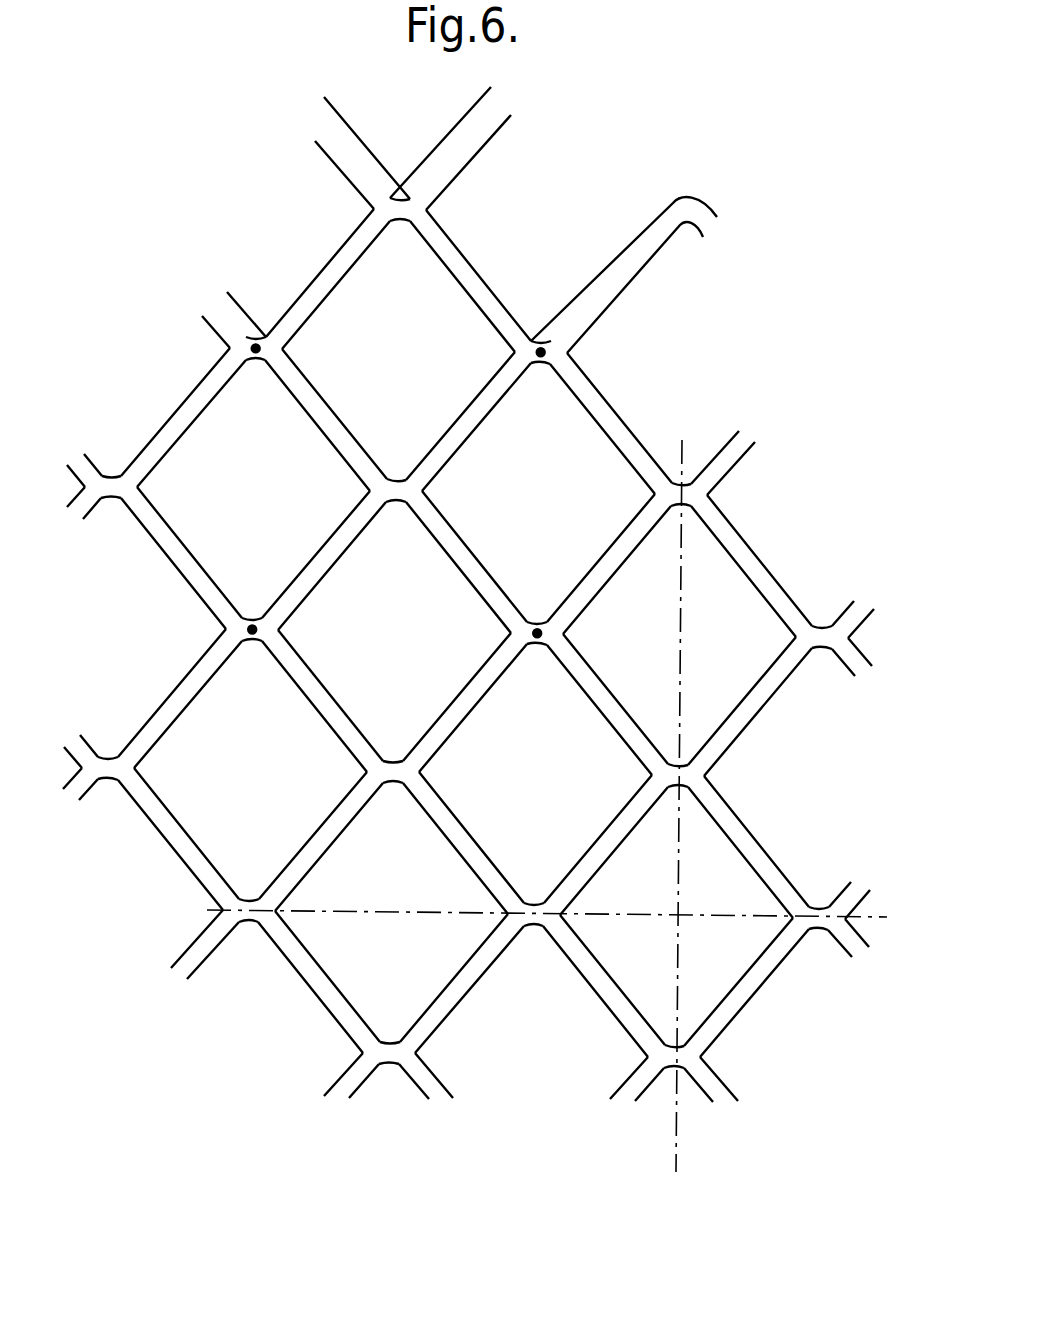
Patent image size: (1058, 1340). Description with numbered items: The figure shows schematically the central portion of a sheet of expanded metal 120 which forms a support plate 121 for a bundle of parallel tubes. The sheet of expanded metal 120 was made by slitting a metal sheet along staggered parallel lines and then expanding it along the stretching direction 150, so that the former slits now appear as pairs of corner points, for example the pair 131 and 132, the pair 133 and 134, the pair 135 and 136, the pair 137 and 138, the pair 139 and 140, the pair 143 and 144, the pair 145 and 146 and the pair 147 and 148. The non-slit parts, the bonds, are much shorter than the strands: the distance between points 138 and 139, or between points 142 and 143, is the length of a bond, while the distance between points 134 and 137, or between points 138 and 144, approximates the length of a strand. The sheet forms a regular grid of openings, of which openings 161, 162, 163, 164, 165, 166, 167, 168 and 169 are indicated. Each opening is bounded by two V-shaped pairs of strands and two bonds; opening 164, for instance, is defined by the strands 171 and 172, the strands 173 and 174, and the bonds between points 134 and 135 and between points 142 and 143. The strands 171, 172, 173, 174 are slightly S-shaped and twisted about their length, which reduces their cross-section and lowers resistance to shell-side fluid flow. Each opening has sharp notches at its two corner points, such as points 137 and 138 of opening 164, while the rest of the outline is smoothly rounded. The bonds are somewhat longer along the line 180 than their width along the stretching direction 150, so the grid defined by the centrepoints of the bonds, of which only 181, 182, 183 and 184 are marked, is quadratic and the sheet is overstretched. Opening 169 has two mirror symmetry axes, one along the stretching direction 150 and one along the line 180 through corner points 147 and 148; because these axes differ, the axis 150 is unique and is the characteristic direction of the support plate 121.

The sheet of expanded metal 120 is at (64, 747).
The support plate 121 is at (80, 735).
The corner point 131 is at (283, 347).
The corner point 132 is at (514, 347).
The corner point 133 is at (135, 487).
The corner point 134 is at (369, 491).
The corner point 135 is at (426, 491).
The corner point 136 is at (656, 495).
The corner point 137 is at (262, 622).
The corner point 138 is at (510, 633).
The corner point 139 is at (563, 634).
The corner point 140 is at (797, 636).
The corner point 142 is at (365, 772).
The corner point 143 is at (420, 772).
The corner point 144 is at (654, 776).
The corner point 145 is at (278, 914).
The corner point 146 is at (509, 918).
The corner point 147 is at (561, 919).
The corner point 148 is at (802, 903).
The stretching direction 150 is at (683, 627).
The opening 161 is at (362, 256).
The opening 162 is at (207, 407).
The opening 163 is at (573, 387).
The opening 164 is at (323, 683).
The opening 165 is at (763, 678).
The opening 166 is at (193, 845).
The opening 167 is at (588, 848).
The opening 168 is at (433, 1002).
The opening 169 is at (752, 1000).
The strand 171 is at (317, 558).
The strand 172 is at (307, 690).
The strand 173 is at (463, 552).
The strand 174 is at (483, 688).
The line perpendicular to the stretching direction 180 is at (877, 921).
The centrepoint of bond 181 is at (254, 348).
The centrepoint of bond 182 is at (542, 352).
The centrepoint of bond 183 is at (250, 631).
The centrepoint of bond 184 is at (538, 631).